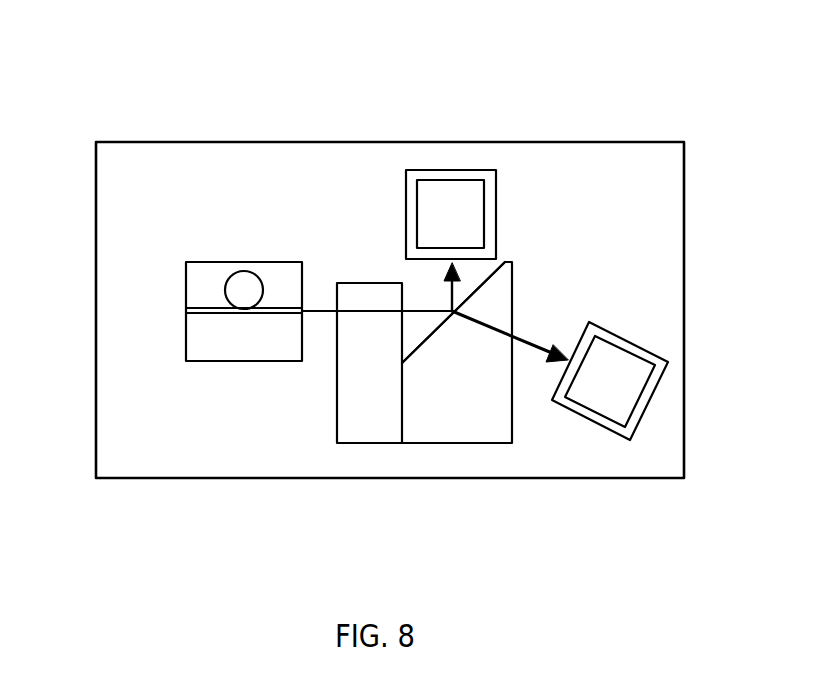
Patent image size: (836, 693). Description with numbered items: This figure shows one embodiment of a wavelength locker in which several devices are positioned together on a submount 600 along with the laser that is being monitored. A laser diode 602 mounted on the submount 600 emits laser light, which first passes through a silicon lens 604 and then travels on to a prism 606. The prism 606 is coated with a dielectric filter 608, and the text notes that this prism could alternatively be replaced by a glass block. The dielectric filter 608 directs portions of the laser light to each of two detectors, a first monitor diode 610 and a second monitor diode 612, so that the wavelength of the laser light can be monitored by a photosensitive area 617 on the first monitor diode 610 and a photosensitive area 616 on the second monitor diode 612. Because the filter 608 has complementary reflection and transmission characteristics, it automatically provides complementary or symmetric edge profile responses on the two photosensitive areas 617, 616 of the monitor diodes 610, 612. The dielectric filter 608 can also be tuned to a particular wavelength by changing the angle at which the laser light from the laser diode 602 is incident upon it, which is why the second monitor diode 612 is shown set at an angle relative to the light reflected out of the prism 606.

The submount 600 is at (96, 383).
The laser diode 602 is at (263, 262).
The silicon lens 604 is at (370, 443).
The prism 606 is at (455, 443).
The dielectric filter 608 is at (438, 327).
The first monitor diode 610 is at (450, 170).
The photosensitive area 617 is at (468, 212).
The second monitor diode 612 is at (653, 402).
The photosensitive area 616 is at (635, 377).